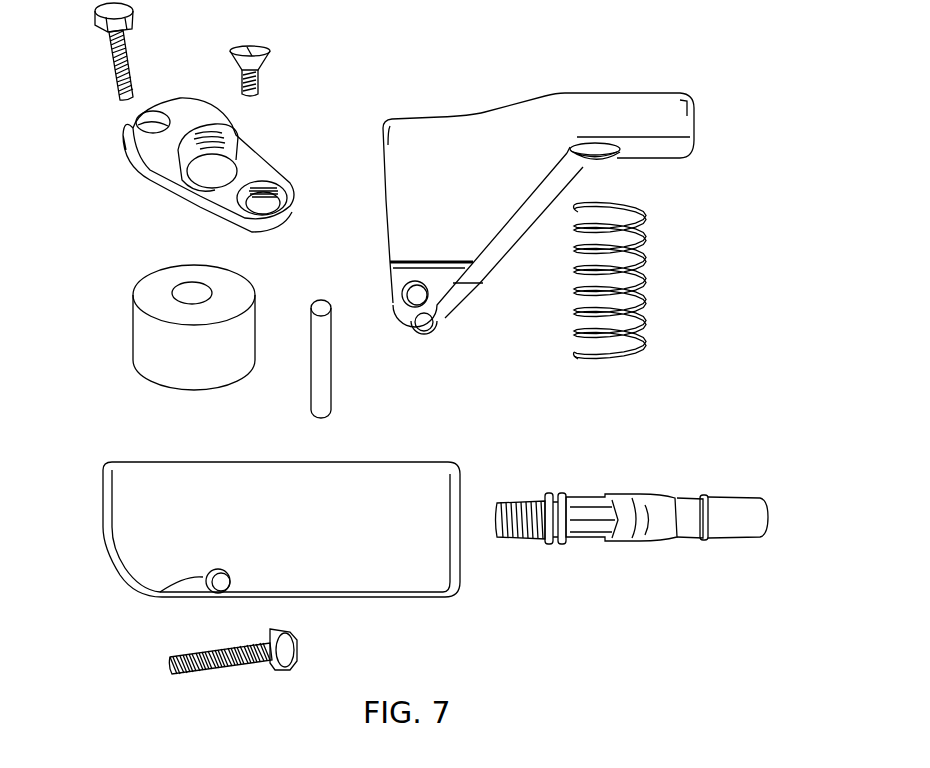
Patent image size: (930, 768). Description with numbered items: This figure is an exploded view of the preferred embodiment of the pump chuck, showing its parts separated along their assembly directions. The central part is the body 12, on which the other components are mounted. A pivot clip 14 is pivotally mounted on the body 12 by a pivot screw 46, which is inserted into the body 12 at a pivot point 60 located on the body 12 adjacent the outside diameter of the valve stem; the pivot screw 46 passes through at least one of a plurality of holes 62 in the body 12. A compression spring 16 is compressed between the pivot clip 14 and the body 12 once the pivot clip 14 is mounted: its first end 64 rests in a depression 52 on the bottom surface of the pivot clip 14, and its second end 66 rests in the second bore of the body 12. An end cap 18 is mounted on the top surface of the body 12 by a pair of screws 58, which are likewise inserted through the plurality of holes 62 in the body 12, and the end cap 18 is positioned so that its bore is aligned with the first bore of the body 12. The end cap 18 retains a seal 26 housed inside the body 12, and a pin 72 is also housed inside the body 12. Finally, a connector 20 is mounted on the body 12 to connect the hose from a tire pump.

The body 12 is at (150, 500).
The pivot clip 14 is at (583, 112).
The compression spring 16 is at (633, 280).
The end cap 18 is at (140, 152).
The connector 20 is at (717, 500).
The seal 26 is at (128, 310).
The pivot screw 46 is at (288, 642).
The depression 52 is at (613, 157).
The pair of screws 58 is at (130, 18).
The pivot point 60 is at (210, 575).
The plurality of holes 62 is at (203, 577).
The first end 64 is at (590, 210).
The second end 66 is at (633, 350).
The pin 72 is at (335, 363).